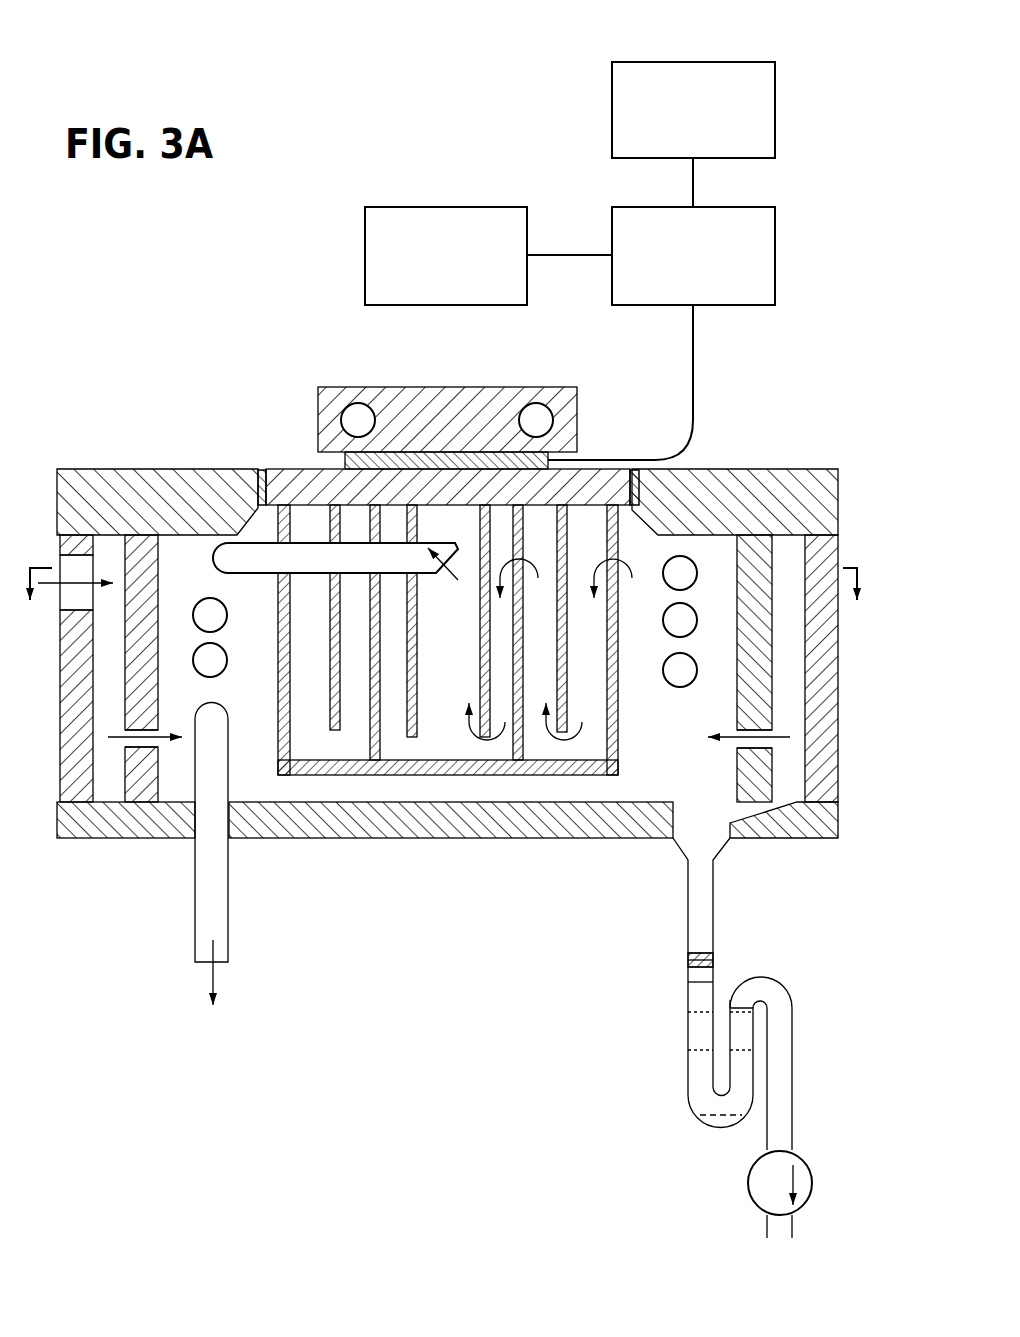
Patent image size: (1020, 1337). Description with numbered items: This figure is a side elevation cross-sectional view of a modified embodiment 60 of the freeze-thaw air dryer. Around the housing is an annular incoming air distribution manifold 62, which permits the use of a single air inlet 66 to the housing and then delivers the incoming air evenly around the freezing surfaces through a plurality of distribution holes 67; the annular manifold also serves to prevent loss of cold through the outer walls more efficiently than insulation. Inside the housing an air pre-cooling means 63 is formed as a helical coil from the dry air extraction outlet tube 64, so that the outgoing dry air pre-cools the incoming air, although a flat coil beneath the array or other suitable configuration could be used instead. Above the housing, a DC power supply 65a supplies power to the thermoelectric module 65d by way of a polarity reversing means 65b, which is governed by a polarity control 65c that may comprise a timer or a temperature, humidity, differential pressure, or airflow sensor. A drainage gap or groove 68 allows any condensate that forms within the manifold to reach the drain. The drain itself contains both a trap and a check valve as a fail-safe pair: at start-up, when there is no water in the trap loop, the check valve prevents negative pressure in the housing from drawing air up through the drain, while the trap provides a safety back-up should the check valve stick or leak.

The modified embodiment of the freeze-thaw air dryer 60 is at (142, 931).
The annular incoming air distribution manifold 62 is at (105, 714).
The air pre-cooling means 63 is at (227, 662).
The dry air extraction outlet tube 64 is at (222, 573).
The DC power supply 65a is at (620, 62).
The polarity reversing means 65b is at (618, 207).
The polarity control 65c is at (373, 207).
The thermoelectric module 65d is at (345, 463).
The air inlet 66 is at (62, 560).
The distribution holes 67 is at (160, 737).
The drainage gap/groove 68 is at (778, 802).